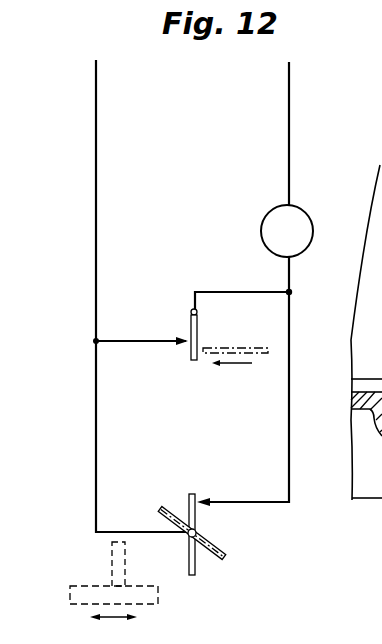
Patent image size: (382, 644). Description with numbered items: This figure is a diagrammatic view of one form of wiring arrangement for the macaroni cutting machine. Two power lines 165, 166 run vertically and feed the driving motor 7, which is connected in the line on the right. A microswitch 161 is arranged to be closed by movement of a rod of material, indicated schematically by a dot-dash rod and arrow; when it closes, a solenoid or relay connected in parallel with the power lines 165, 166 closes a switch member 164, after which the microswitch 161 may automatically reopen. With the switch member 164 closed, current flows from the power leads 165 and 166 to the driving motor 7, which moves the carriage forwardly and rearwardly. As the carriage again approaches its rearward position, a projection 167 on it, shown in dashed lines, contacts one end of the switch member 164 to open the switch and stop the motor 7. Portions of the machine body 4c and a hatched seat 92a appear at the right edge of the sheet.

The power line 165 is at (97, 128).
The power line 166 is at (290, 126).
The driving motor 7 is at (262, 216).
The microswitch 161 is at (199, 332).
The switch member 164 is at (197, 521).
The projection 167 is at (112, 545).
The body 4c is at (366, 332).
The seat 92a is at (362, 410).